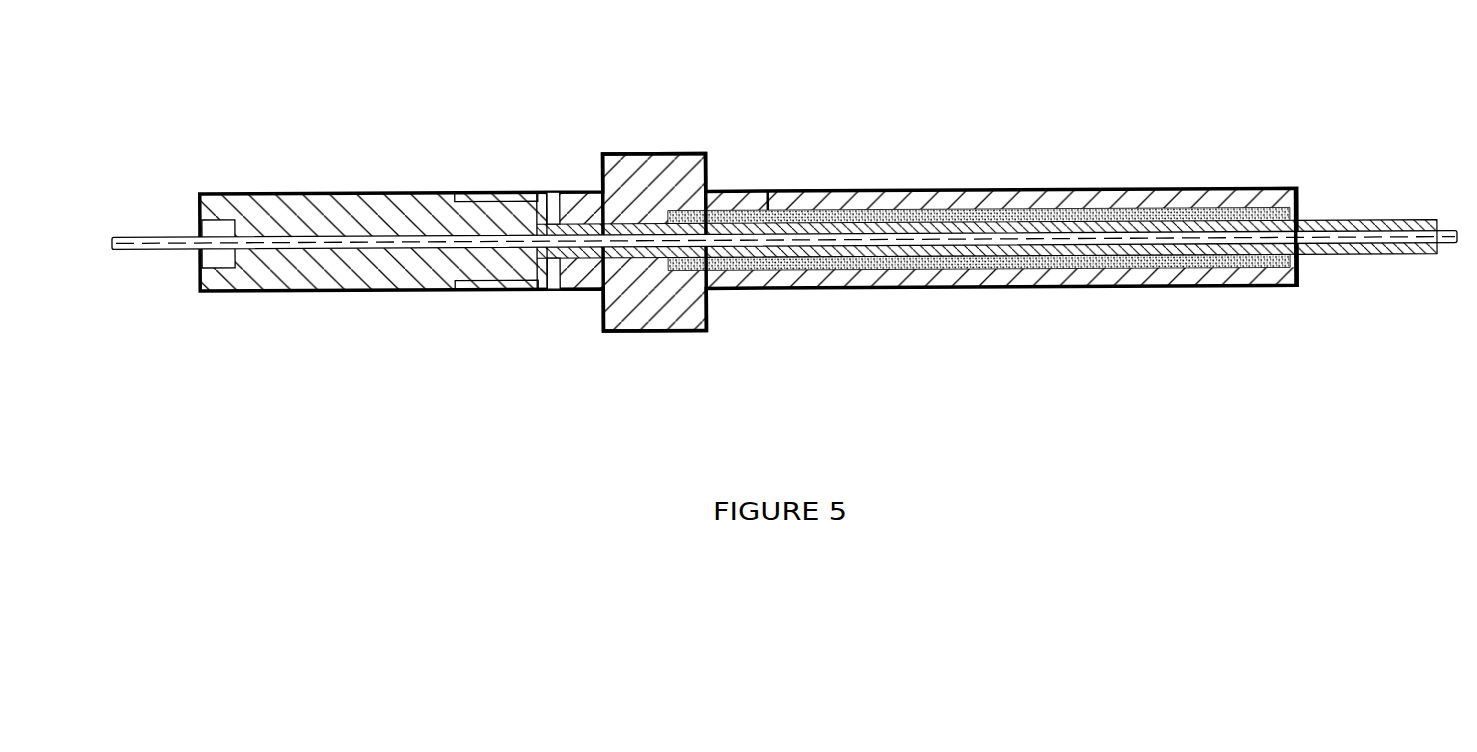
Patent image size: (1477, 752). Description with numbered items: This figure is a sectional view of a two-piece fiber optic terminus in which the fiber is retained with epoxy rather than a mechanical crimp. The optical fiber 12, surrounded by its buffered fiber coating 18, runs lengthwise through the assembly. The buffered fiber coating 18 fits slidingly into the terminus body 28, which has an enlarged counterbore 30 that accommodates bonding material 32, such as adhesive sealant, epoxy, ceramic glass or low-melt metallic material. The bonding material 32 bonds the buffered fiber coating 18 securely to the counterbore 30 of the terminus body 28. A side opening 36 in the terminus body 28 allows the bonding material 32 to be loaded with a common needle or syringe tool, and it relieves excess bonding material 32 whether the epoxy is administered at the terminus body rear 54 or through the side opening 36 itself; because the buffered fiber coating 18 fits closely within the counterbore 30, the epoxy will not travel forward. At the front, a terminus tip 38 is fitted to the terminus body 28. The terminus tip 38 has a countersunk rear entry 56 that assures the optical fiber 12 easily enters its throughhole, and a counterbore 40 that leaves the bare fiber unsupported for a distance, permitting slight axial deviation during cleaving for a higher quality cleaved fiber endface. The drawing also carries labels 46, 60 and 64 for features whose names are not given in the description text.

The optical fiber 12 is at (163, 236).
The buffered fiber coating 18 is at (1338, 220).
The terminus body 28 is at (668, 151).
The counterbore 30 is at (1115, 216).
The bonding material 32 is at (838, 208).
The side opening 36 is at (773, 190).
The terminus tip 38 is at (312, 293).
The counterbore 40 is at (207, 258).
The insert 46 is at (546, 258).
The terminus body rear 54 is at (1300, 285).
The countersunk rear entry 56 is at (527, 230).
The gap 60 is at (547, 192).
The shoulder 64 is at (455, 287).